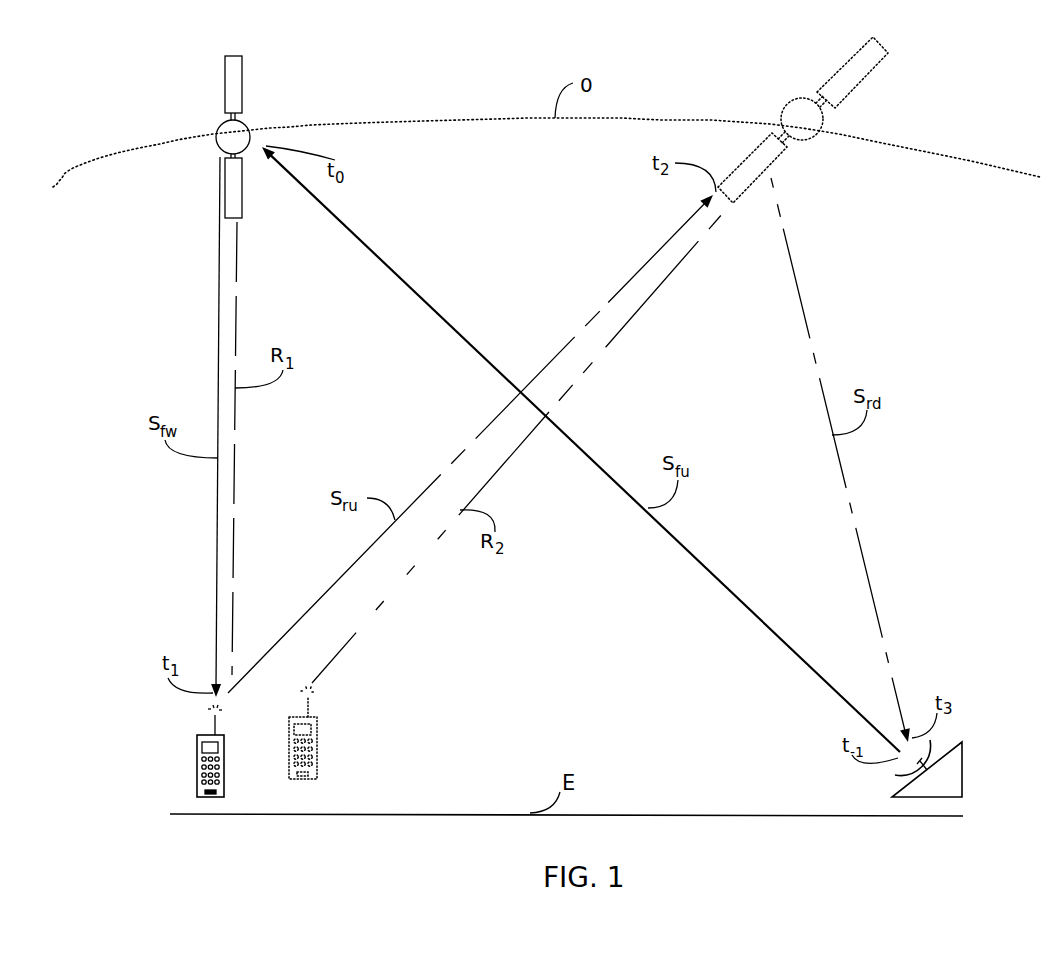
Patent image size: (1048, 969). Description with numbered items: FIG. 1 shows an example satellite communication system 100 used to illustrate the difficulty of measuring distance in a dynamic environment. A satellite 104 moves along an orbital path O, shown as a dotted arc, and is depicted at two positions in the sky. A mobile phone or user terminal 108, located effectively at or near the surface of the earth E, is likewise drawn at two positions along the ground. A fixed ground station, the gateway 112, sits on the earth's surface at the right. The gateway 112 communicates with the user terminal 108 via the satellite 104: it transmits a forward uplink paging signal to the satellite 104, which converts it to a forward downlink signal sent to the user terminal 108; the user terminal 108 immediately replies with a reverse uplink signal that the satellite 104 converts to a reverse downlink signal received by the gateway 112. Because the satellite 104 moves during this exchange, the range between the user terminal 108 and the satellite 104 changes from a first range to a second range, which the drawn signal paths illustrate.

The communication system 100 is at (100, 121).
The satellite 104 is at (243, 83).
The user terminal 108 is at (197, 783).
The gateway 112 is at (962, 760).